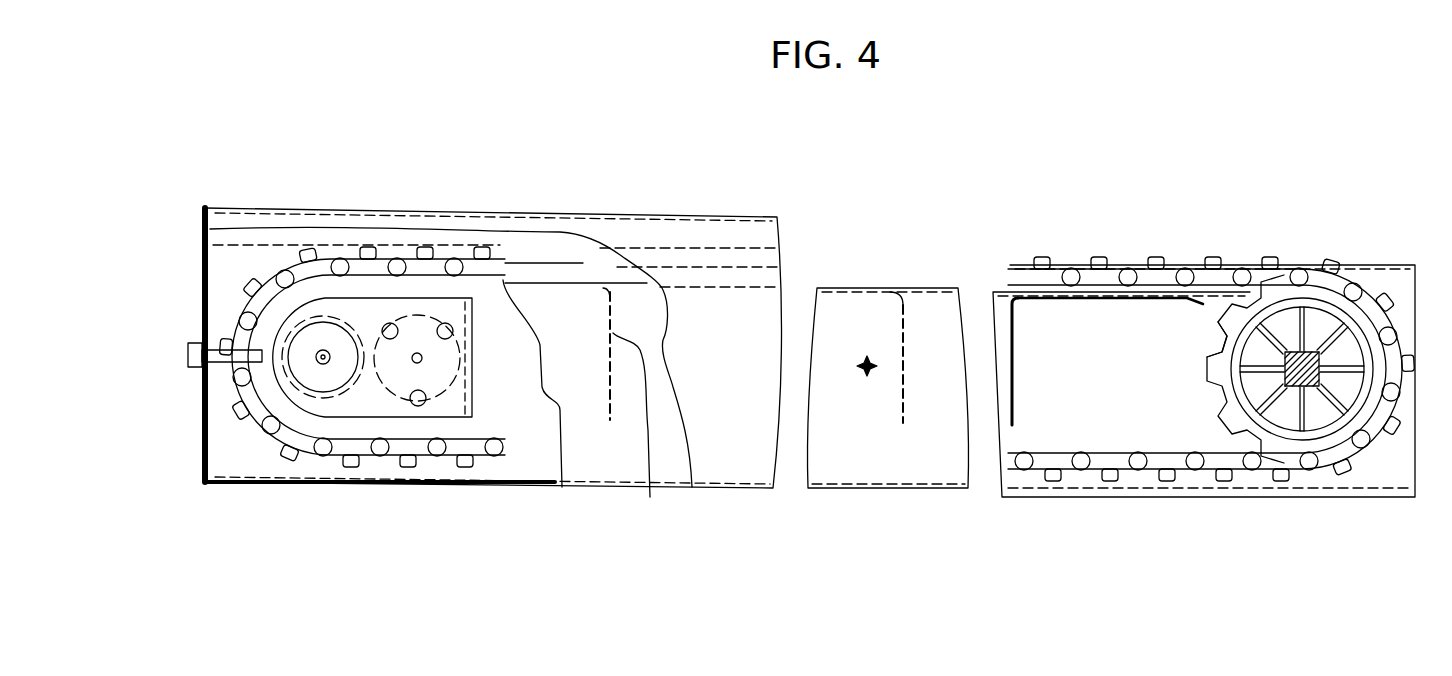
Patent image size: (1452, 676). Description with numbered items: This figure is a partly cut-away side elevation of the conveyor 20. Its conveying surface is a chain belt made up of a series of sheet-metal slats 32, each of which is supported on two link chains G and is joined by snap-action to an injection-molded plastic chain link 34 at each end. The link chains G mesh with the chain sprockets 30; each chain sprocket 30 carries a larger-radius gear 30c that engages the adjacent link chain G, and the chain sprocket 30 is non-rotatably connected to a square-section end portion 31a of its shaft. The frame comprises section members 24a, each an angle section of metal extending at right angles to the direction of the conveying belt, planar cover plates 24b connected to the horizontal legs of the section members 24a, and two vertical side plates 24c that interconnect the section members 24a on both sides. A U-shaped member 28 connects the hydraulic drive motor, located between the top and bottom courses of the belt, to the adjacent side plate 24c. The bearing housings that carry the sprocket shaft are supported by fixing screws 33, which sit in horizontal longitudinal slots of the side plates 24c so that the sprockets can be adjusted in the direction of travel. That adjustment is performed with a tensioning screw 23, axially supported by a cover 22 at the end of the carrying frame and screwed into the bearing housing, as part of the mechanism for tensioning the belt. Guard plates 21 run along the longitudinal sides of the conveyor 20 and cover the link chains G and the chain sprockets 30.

The conveyor 20 is at (1030, 234).
The guard plate 21 is at (705, 230).
The cover 22 is at (198, 420).
The tensioning screw 23 is at (187, 353).
The section member 24a is at (650, 497).
The cover plate 24b is at (740, 288).
The side plate 24c is at (747, 394).
The U-shaped member 28 is at (323, 357).
The chain sprocket 30 is at (1208, 423).
The gear 30c is at (1223, 390).
The square-section end portion 31a is at (1312, 393).
The slat 32 is at (237, 312).
The fixing screw 33 is at (417, 362).
The chain link 34 is at (282, 438).
The link chain G is at (220, 282).